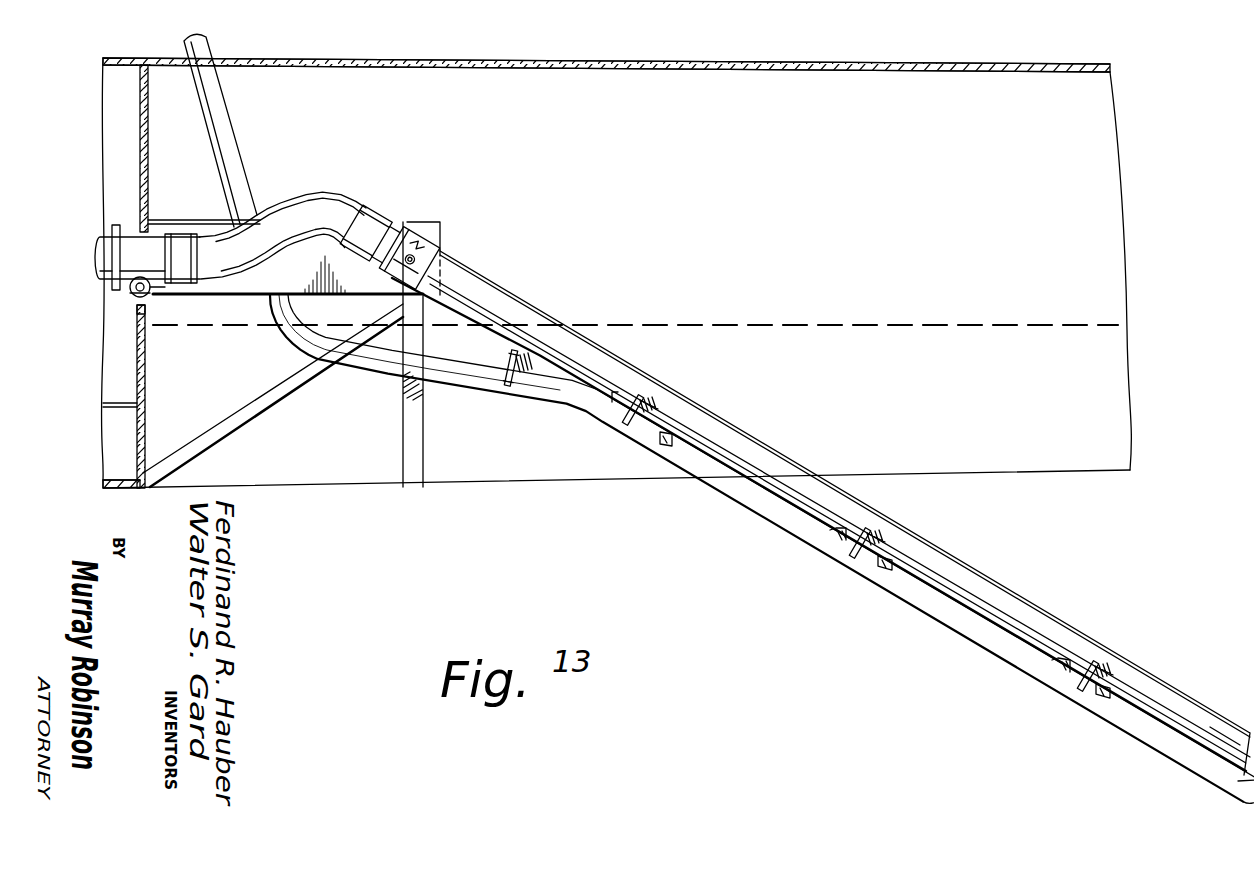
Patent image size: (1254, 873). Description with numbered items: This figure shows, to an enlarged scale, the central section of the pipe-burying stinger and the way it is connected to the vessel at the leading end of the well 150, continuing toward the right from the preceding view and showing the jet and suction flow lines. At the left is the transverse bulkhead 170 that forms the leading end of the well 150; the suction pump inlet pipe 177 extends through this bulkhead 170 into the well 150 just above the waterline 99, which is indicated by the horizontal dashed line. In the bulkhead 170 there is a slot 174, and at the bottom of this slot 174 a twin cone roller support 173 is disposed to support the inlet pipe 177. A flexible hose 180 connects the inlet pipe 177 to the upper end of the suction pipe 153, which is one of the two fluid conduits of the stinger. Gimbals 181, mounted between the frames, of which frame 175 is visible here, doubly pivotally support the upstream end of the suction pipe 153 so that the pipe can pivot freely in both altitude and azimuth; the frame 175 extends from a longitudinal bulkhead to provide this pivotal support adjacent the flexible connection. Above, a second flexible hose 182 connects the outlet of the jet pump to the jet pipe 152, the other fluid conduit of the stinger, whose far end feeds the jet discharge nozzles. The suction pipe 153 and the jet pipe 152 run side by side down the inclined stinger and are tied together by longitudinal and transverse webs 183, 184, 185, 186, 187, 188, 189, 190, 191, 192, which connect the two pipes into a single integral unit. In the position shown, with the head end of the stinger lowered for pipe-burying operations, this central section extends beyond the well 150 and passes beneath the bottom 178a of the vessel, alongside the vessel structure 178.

The waterline 99 is at (690, 324).
The well 150 is at (552, 466).
The jet pipe 152 is at (926, 604).
The suction pipe 153 is at (492, 286).
The transverse bulkhead 170 is at (140, 128).
The twin cone roller support 173 is at (131, 290).
The slot 174 is at (138, 308).
The frame 175 is at (424, 404).
The suction pump inlet pipe 177 is at (94, 256).
The tank wall 178 is at (130, 57).
The bottom of the vessel 178a is at (128, 482).
The flexible hose 180 is at (320, 192).
The gimbals 181 is at (457, 248).
The flexible hose 182 is at (236, 104).
The web 183 is at (516, 380).
The web 184 is at (636, 426).
The web 185 is at (668, 447).
The web 186 is at (836, 544).
The web 187 is at (862, 566).
The web 188 is at (890, 564).
The web 189 is at (1058, 672).
The web 190 is at (1066, 690).
The web 191 is at (1102, 700).
The web 192 is at (1226, 781).